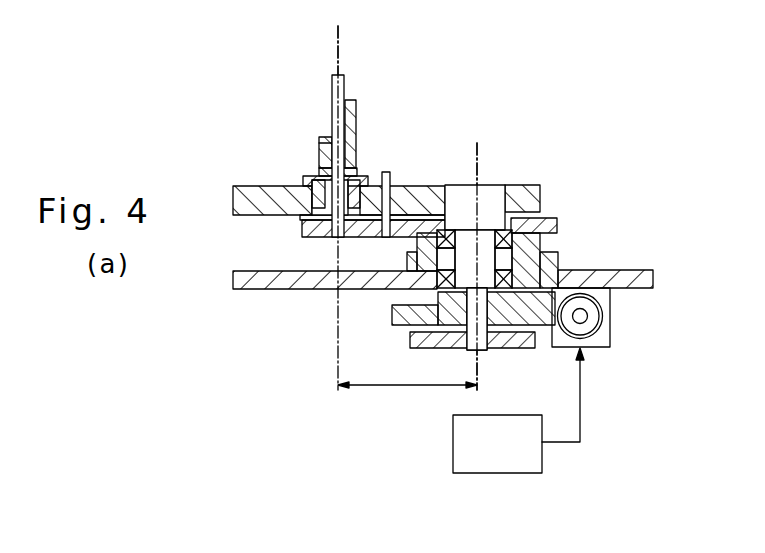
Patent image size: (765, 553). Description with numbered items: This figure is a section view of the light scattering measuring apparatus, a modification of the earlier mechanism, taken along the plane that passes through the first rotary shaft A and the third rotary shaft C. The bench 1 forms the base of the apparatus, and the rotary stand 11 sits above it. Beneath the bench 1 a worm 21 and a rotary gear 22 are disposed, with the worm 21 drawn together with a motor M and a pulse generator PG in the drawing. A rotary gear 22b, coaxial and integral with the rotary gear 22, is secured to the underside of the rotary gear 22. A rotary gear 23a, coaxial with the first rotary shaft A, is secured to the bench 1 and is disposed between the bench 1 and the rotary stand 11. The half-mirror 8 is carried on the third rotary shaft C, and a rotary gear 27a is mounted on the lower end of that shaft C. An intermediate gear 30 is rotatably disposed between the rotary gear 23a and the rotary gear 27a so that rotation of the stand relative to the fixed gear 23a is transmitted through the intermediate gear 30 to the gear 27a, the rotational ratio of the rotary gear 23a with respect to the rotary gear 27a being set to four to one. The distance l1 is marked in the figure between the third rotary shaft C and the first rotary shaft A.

The bench 1 is at (241, 291).
The half-mirror 8 is at (348, 84).
The rotary stand 11 is at (251, 184).
The worm 21 is at (593, 323).
The rotary gear 22 is at (396, 315).
The rotary gear 22b is at (509, 349).
The rotary gear 23a is at (556, 226).
The rotary gear 27a is at (302, 234).
The intermediate gear 30 is at (379, 239).
The motor M is at (609, 294).
The pulse generator PG is at (456, 442).
The third rotary shaft C is at (339, 195).
The first rotary shaft A is at (476, 251).
The distance l1 is at (407, 375).